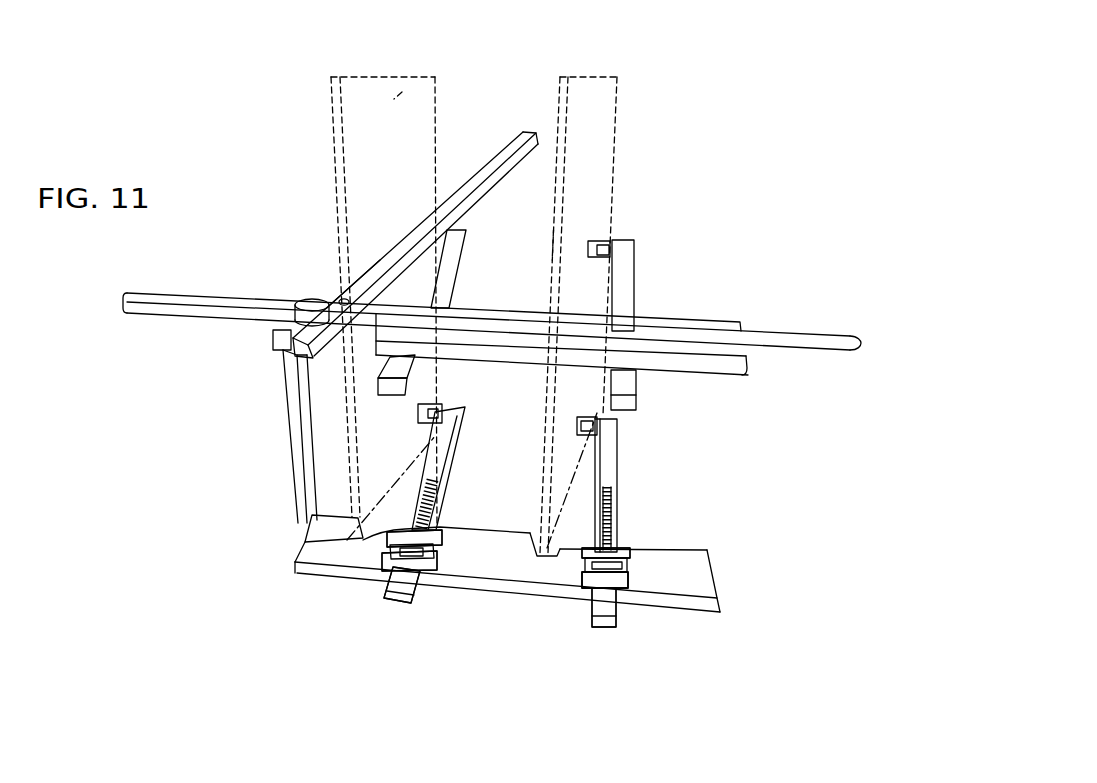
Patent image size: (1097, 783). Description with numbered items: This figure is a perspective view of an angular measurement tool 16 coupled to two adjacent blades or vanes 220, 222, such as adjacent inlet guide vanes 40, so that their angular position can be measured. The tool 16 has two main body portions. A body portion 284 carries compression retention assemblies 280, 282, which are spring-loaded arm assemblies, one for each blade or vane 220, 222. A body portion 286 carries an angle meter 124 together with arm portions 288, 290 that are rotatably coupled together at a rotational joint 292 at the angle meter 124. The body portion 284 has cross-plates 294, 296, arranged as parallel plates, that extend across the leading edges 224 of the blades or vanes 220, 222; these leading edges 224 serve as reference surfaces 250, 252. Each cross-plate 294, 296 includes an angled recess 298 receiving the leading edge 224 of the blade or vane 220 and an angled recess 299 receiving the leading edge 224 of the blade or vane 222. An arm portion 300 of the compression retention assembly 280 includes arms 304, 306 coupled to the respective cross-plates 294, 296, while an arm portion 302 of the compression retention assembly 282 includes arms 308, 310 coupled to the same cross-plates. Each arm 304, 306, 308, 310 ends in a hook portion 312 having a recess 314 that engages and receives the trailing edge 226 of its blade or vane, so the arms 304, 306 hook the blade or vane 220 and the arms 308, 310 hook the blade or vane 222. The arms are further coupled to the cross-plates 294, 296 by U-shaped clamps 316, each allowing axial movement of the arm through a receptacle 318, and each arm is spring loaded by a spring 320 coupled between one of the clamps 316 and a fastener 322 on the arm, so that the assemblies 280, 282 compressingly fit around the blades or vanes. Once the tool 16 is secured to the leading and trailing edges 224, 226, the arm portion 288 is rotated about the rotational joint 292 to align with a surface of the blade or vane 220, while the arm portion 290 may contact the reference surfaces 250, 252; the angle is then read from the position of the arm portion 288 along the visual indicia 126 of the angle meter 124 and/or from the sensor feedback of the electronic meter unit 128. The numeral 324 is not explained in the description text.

The angular measurement tool 16 is at (152, 400).
The inlet guide vanes 40 is at (756, 41).
The angle meter 124 is at (268, 330).
The indicia 126 is at (318, 304).
The electronic meter unit 128 is at (338, 299).
The blade or vane 220 is at (362, 100).
The blade or vane 222 is at (615, 95).
The leading edge 224 is at (333, 108).
The trailing edge 226 is at (437, 105).
The reference surface 250 is at (550, 244).
The reference surface 252 is at (333, 136).
The compression retention assembly 280 is at (340, 591).
The compression retention assembly 282 is at (642, 636).
The body portion 284 is at (810, 518).
The body portion 286 is at (313, 378).
The arm portion 288 is at (472, 173).
The arm portion 290 is at (762, 332).
The rotational joint 292 is at (337, 290).
The cross-plate 294 is at (740, 375).
The cross-plate 296 is at (710, 606).
The angled recess 298 is at (358, 542).
The angled recess 299 is at (557, 556).
The arm portion 300 is at (375, 614).
The arm portion 302 is at (612, 648).
The arm 304 is at (458, 263).
The arm 306 is at (452, 451).
The arm 308 is at (634, 279).
The arm 310 is at (610, 456).
The hook portion 312 is at (470, 226).
The recess 314 is at (607, 246).
The U-shaped clamp 316 is at (442, 541).
The receptacle 318 is at (418, 583).
The spring 320 is at (436, 498).
The fastener 322 is at (609, 486).
The frame corner 324 is at (403, 93).